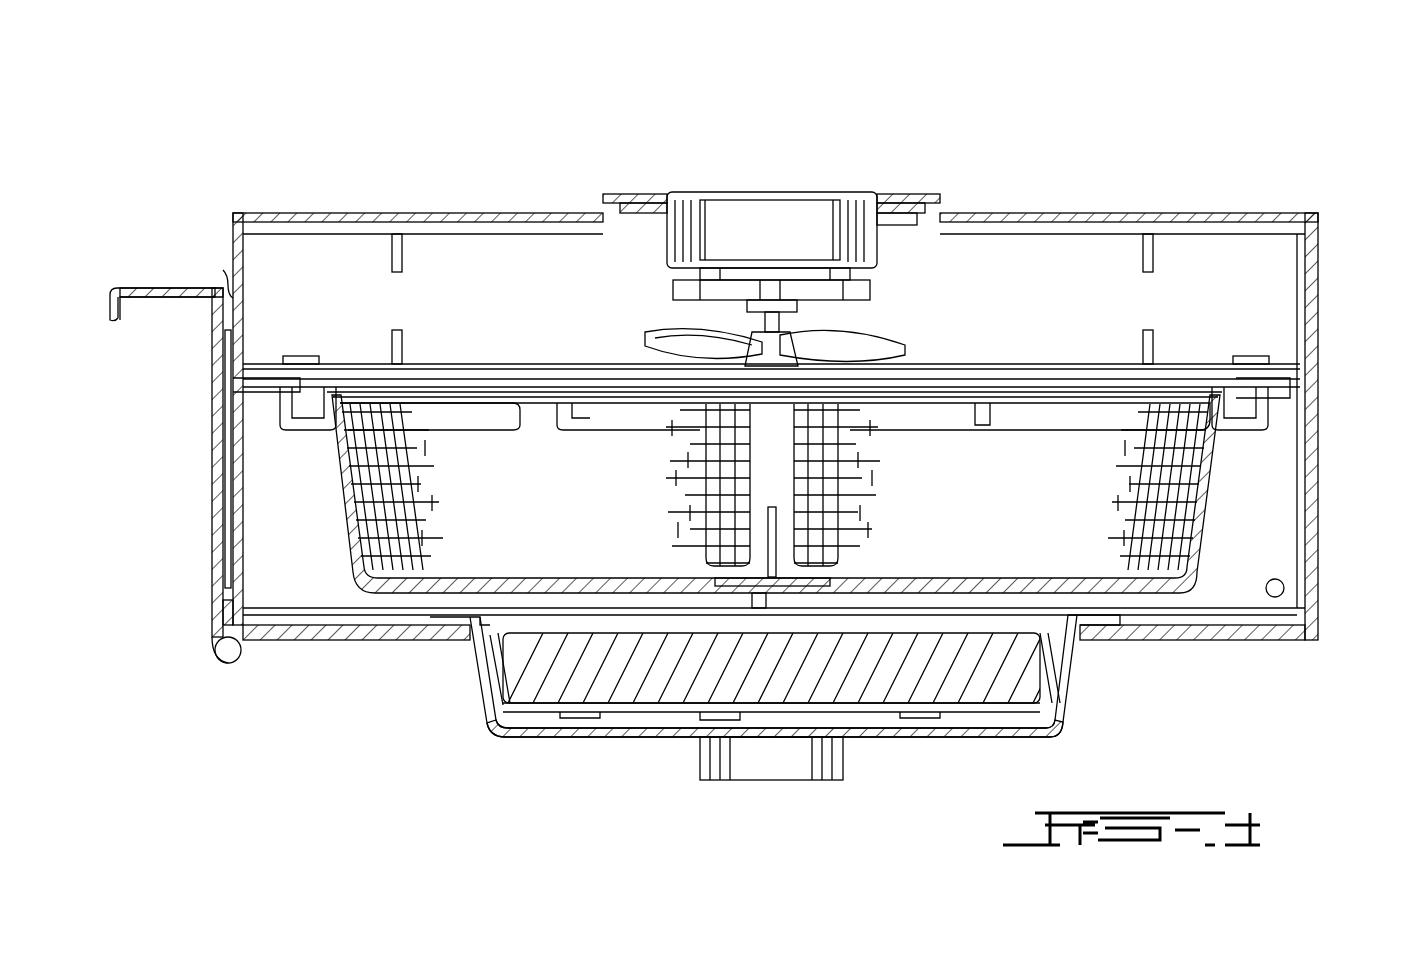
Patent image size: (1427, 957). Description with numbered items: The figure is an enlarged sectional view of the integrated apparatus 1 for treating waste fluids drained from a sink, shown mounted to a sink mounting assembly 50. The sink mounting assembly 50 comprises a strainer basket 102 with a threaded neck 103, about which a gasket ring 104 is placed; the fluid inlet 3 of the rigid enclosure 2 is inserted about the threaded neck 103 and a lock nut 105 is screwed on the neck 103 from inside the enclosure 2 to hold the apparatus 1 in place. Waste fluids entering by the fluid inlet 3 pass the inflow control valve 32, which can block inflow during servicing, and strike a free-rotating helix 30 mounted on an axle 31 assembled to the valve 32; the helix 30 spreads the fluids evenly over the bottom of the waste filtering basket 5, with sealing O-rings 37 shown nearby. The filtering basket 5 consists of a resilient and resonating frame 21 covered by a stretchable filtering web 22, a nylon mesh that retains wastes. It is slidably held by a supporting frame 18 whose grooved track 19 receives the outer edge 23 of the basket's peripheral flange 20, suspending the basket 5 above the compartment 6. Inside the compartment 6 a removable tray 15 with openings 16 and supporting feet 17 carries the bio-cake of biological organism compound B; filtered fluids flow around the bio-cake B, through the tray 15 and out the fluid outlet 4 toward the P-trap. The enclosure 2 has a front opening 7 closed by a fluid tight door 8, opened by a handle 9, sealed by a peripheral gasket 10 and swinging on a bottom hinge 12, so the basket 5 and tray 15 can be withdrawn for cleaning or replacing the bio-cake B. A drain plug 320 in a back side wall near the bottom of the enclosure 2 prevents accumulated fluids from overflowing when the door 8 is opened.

The integrated apparatus 1 is at (1266, 178).
The rigid enclosure 2 is at (280, 218).
The fluid inlet 3 is at (632, 200).
The fluid outlet 4 is at (838, 762).
The waste filtering basket 5 is at (1220, 508).
The compartment 6 is at (1072, 668).
The front opening 7 is at (265, 538).
The fluid tight door 8 is at (218, 490).
The handle 9 is at (118, 300).
The peripheral gasket 10 is at (230, 272).
The bottom hinge 12 is at (228, 662).
The removable tray 15 is at (476, 660).
The openings 16 is at (482, 708).
The supporting feet 17 is at (496, 742).
The supporting frame 18 is at (302, 368).
The grooved track 19 is at (1272, 385).
The peripheral flange 20 is at (228, 392).
The resilient and resonating frame 21 is at (780, 480).
The stretchable filtering web 22 is at (1170, 462).
The outer edge 23 is at (462, 386).
The free-rotating helix 30 is at (890, 336).
The axle 31 is at (668, 320).
The inflow control valve 32 is at (862, 302).
The sealing O-rings 37 is at (700, 276).
The sink mounting assembly 50 is at (724, 166).
The strainer basket 102 is at (842, 214).
The threaded neck 103 is at (880, 262).
The gasket ring 104 is at (935, 200).
The lock nut 105 is at (893, 240).
The drain plug 320 is at (1282, 598).
The biological organism compound B is at (962, 676).